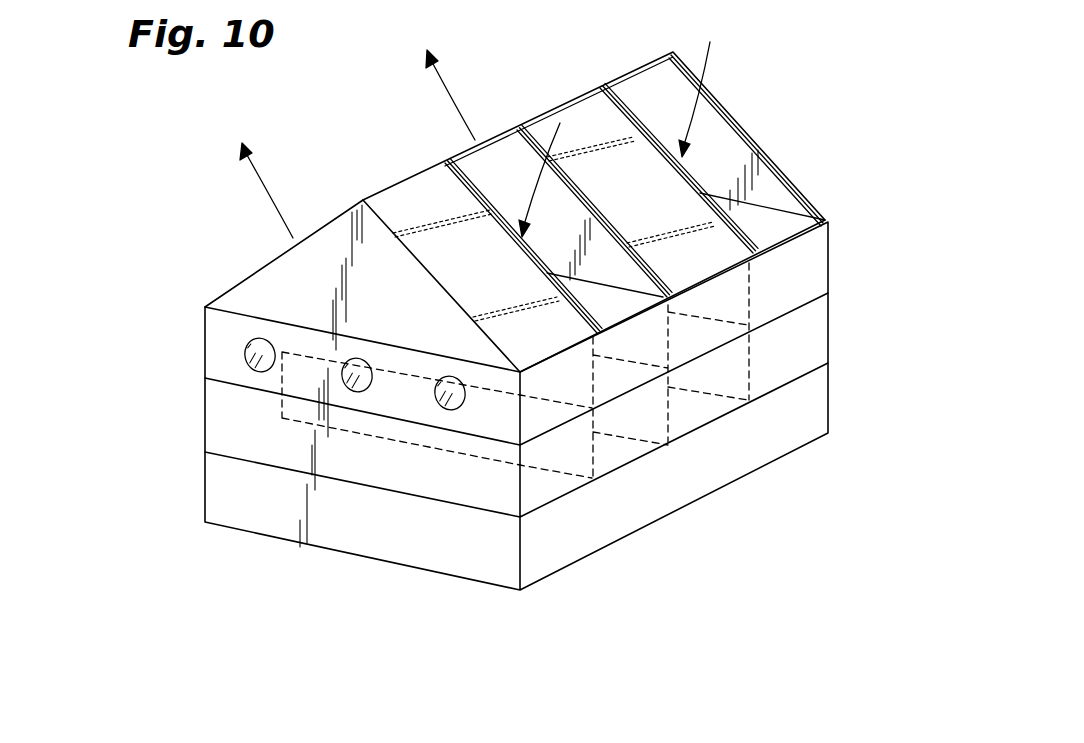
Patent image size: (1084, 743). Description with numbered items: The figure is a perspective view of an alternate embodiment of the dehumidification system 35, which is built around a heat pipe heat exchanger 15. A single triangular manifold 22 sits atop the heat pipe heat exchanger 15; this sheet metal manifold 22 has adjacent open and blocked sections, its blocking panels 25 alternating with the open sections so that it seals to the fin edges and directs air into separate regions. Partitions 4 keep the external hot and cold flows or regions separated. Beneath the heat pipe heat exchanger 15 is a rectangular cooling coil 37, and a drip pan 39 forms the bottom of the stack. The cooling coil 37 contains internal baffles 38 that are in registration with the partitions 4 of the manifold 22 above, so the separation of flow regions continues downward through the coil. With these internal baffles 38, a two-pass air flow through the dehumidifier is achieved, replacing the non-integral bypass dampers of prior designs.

The dehumidification system 35 is at (195, 240).
The blocking panels 25 is at (400, 200).
The triangular manifold 22 is at (768, 137).
The heat pipe heat exchanger 15 is at (820, 262).
The cooling coil 37 is at (820, 338).
The drip pan 39 is at (820, 408).
The partitions 4 is at (600, 372).
The internal baffles 38 is at (597, 448).